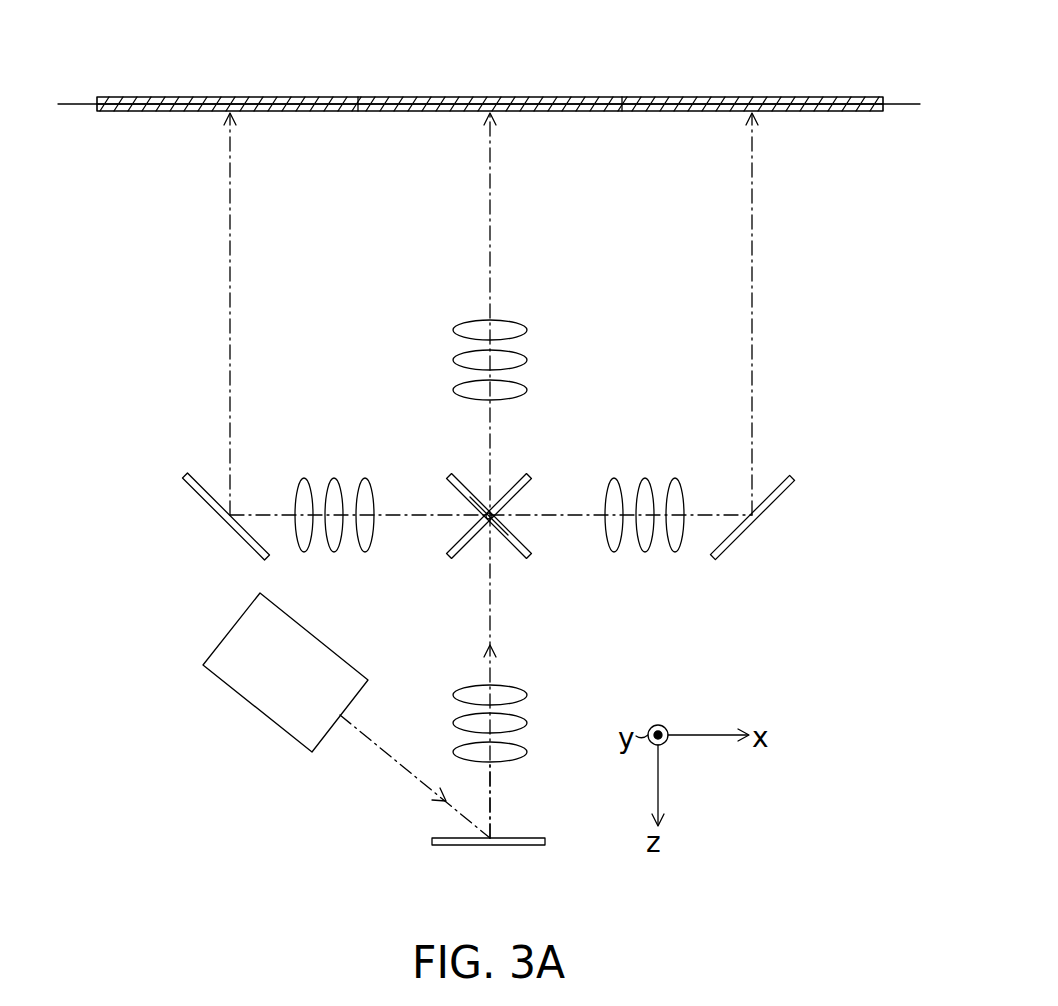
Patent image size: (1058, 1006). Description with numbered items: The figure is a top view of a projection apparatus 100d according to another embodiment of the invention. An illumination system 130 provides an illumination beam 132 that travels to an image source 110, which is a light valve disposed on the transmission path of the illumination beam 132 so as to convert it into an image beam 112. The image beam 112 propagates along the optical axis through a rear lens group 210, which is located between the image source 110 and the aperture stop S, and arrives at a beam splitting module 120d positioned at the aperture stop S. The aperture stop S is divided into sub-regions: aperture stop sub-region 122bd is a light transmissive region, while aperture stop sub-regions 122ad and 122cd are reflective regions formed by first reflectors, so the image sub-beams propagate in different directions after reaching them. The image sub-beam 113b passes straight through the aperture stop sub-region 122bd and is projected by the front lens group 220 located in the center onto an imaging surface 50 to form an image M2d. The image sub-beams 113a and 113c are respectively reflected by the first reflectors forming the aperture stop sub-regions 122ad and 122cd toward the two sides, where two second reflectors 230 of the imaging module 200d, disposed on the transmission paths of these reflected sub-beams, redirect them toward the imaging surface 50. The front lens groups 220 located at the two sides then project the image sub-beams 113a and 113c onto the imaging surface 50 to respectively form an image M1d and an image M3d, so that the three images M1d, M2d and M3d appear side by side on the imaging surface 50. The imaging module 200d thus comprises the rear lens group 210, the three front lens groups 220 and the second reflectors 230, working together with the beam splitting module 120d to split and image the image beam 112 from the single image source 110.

The imaging surface 50 is at (900, 95).
The image M1d is at (153, 94).
The image M2d is at (412, 94).
The image M3d is at (707, 94).
The image sub-beam 113a is at (232, 181).
The image sub-beam 113b is at (492, 181).
The image sub-beam 113c is at (754, 181).
The imaging module 200d is at (352, 335).
The front lens group 220 is at (449, 318).
The second reflector 230 is at (208, 500).
The beam splitting module 120d is at (610, 582).
The aperture stop sub-region 122ad is at (532, 488).
The aperture stop sub-region 122bd is at (512, 524).
The aperture stop sub-region 122cd is at (521, 560).
The aperture stop S is at (500, 487).
The illumination system 130 is at (253, 712).
The illumination beam 132 is at (393, 760).
The image source 110 is at (530, 848).
The image beam 112 is at (492, 800).
The rear lens group 210 is at (533, 685).
The projection apparatus 100d is at (836, 870).